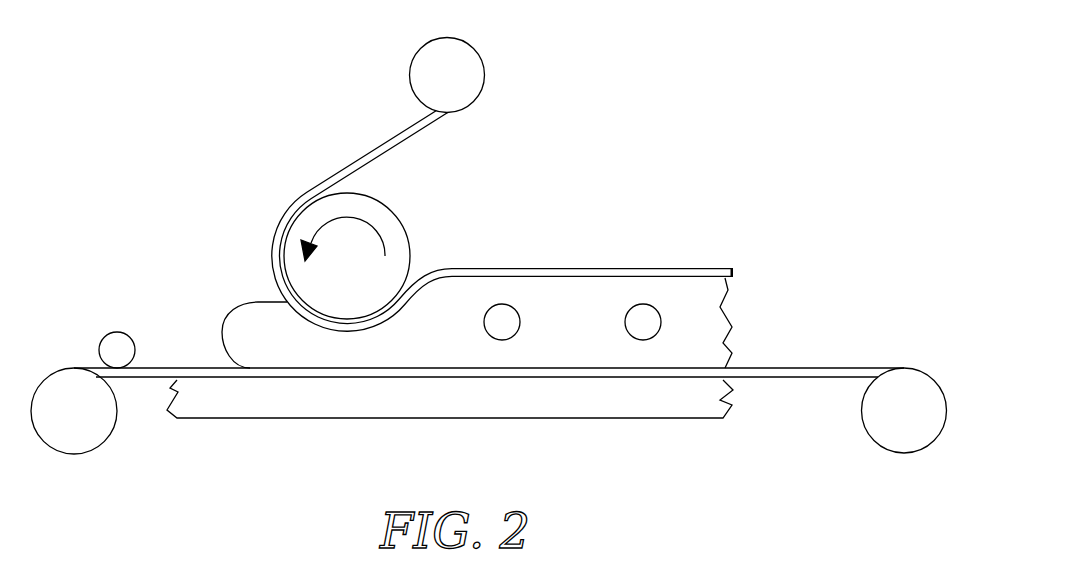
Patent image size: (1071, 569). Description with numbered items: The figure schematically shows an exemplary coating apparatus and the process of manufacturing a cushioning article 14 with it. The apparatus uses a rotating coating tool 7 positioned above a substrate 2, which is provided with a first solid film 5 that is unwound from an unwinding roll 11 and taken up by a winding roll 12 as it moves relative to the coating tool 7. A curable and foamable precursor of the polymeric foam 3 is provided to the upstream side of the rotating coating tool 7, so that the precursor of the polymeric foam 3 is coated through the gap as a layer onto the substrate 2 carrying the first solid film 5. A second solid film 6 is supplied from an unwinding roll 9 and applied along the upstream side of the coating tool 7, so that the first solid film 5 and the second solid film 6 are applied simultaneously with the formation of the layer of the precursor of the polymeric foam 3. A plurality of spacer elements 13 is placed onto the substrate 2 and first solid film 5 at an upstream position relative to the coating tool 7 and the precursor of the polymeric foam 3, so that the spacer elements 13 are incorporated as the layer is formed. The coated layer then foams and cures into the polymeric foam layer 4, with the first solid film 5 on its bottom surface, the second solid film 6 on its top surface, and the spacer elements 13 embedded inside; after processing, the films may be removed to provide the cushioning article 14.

The substrate 2 is at (458, 400).
The precursor of the polymeric foam 3 is at (240, 302).
The polymeric foam layer 4 is at (705, 298).
The first solid film 5 is at (138, 381).
The second solid film 6 is at (572, 263).
The coating tool 7 is at (397, 217).
The unwinding roll 9 is at (467, 70).
The unwinding roll 11 is at (82, 454).
The winding roll 12 is at (903, 453).
The spacer elements 13 is at (655, 306).
The cushioning article 14 is at (700, 104).